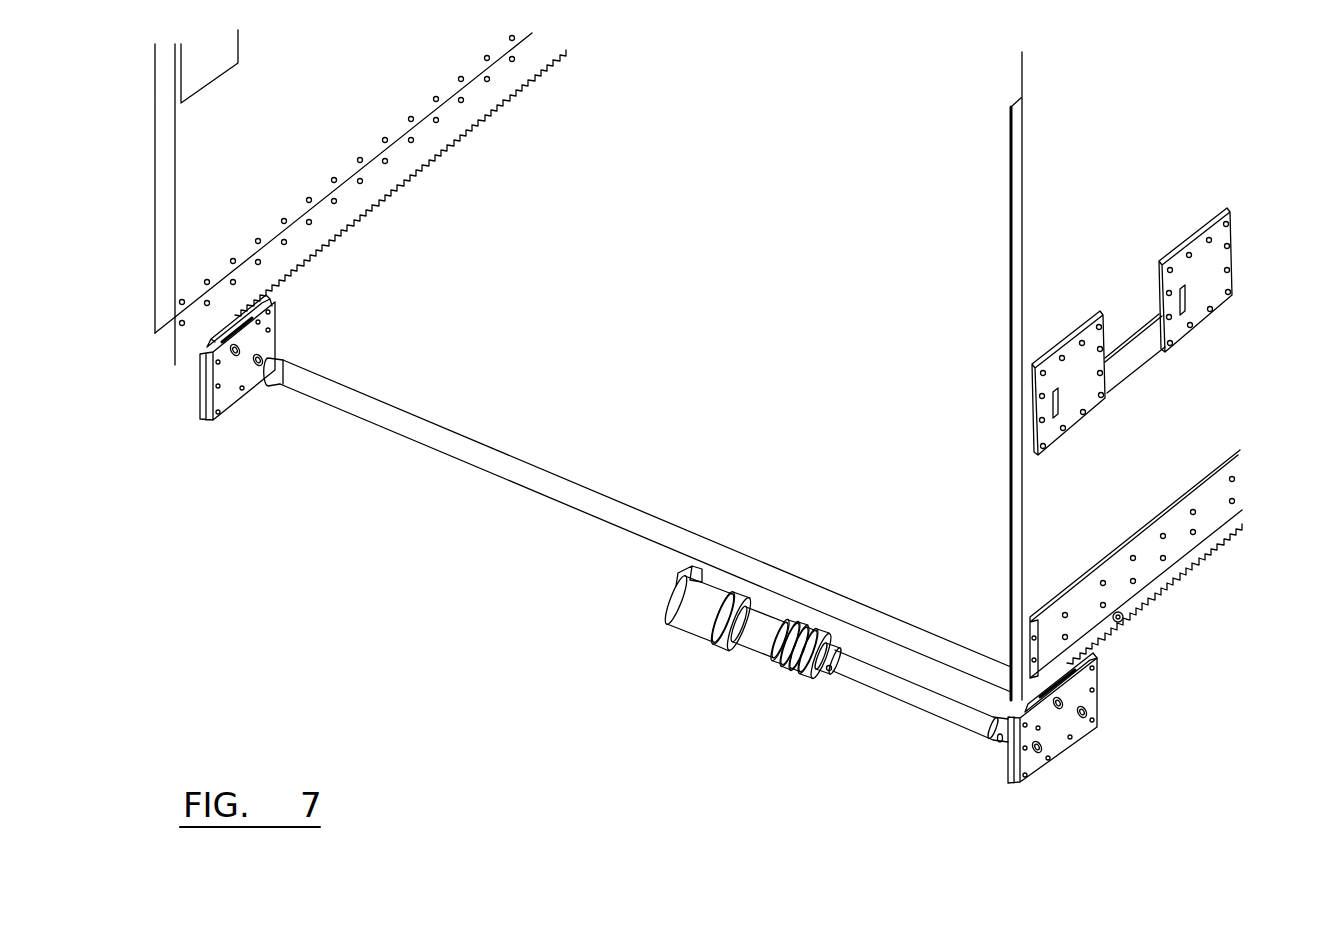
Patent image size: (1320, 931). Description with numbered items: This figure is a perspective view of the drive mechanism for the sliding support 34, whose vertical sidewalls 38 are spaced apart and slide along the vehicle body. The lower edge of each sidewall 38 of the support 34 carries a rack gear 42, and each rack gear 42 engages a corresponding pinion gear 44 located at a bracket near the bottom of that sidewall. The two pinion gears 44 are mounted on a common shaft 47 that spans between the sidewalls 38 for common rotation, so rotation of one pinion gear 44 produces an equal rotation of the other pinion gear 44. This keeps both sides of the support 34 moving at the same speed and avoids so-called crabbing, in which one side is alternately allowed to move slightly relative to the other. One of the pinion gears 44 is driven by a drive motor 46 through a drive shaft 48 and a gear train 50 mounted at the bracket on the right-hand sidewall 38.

The support 34 is at (233, 163).
The sidewall 38 is at (1132, 465).
The rack gear 42 is at (388, 193).
The pinion gear 44 is at (242, 343).
The drive motor 46 is at (693, 608).
The common shaft 47 is at (498, 465).
The drive shaft 48 is at (923, 700).
The gear train 50 is at (1057, 743).